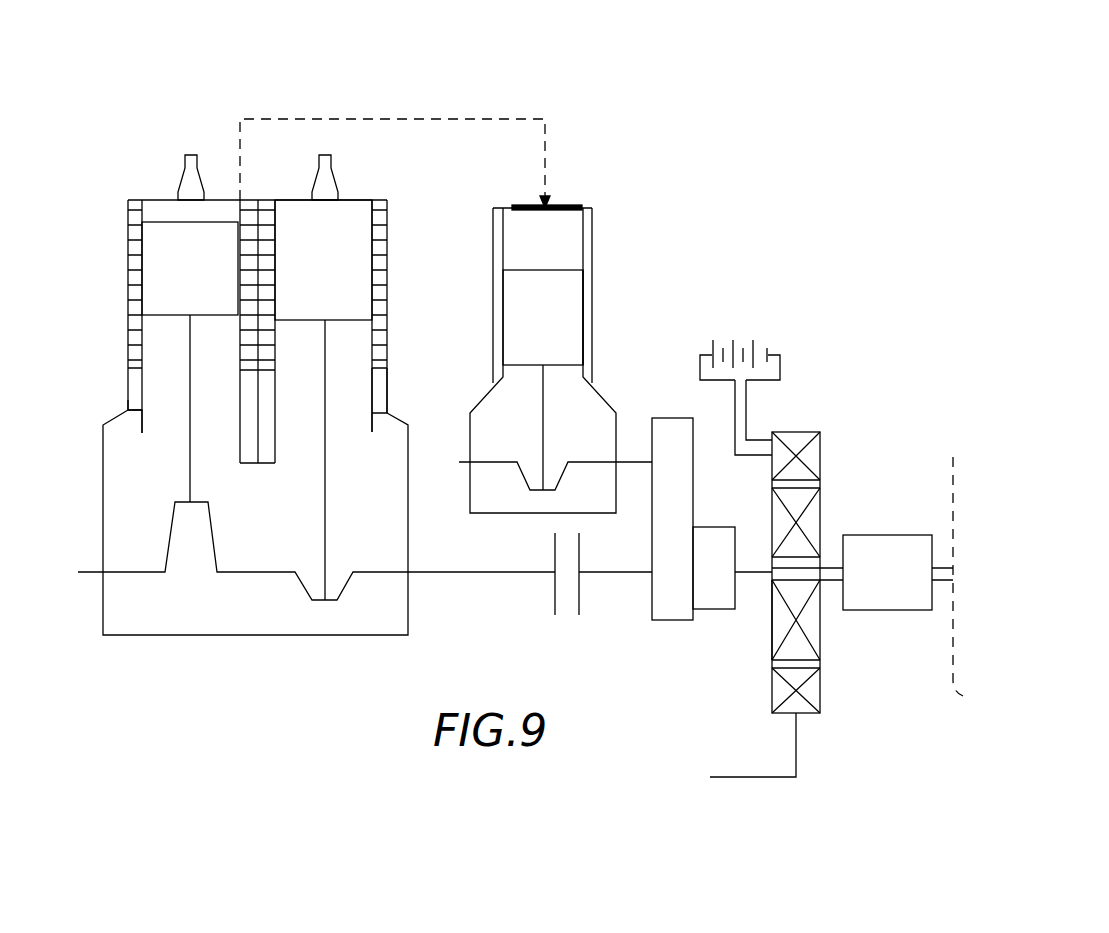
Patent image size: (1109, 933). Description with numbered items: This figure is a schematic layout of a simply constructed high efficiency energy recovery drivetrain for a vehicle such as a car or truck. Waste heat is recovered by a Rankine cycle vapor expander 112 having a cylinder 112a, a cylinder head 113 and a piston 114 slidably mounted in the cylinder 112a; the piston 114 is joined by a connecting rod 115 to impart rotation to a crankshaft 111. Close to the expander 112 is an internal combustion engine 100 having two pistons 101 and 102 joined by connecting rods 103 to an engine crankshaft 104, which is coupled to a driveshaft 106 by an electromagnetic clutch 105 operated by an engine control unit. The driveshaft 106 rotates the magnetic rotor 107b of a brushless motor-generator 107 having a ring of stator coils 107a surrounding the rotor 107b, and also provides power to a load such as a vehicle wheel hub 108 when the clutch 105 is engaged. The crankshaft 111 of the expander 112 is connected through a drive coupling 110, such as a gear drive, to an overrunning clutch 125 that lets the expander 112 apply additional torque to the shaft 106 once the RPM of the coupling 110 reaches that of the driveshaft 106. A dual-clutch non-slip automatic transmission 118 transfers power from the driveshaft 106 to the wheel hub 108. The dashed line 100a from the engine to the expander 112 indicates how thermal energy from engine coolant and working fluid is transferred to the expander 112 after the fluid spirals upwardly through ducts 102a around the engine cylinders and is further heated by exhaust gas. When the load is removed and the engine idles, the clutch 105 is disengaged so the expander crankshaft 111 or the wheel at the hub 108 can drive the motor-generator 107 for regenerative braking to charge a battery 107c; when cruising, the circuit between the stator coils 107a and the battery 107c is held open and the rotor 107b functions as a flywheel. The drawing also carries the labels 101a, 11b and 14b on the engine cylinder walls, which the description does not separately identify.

The internal combustion engine 100 is at (392, 206).
The dashed line 100a is at (520, 119).
The piston 101 is at (163, 222).
The first cylinder 101a is at (142, 412).
The first cylinder wall 11b is at (130, 287).
The piston 102 is at (285, 316).
The ducts 102a is at (388, 259).
The second cylinder wall 14b is at (388, 296).
The connecting rods 103 is at (323, 492).
The engine crankshaft 104 is at (340, 582).
The electromagnetic clutch 105 is at (553, 590).
The driveshaft 106 is at (622, 575).
The drive coupling 110 is at (667, 418).
The crankshaft 111 is at (578, 462).
The Rankine cycle vapor expander 112 is at (488, 217).
The cylinder 112a is at (583, 296).
The cylinder head 113 is at (503, 208).
The piston 114 is at (540, 270).
The connecting rod 115 is at (543, 395).
The overrunning clutch 125 is at (720, 612).
The brushless motor-generator 107 is at (807, 420).
The stator coils 107a is at (815, 715).
The magnetic rotor 107b is at (770, 630).
The battery 107c is at (712, 352).
The dual-clutch non-slip automatic transmission 118 is at (873, 535).
The vehicle wheel hub 108 is at (953, 457).